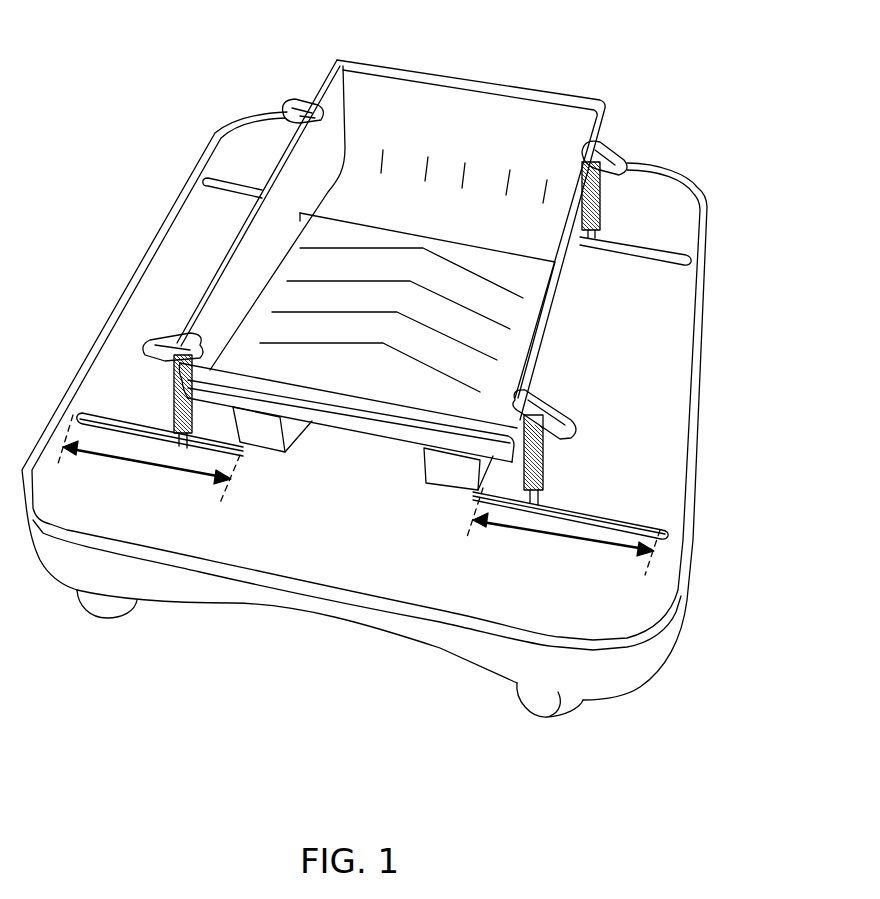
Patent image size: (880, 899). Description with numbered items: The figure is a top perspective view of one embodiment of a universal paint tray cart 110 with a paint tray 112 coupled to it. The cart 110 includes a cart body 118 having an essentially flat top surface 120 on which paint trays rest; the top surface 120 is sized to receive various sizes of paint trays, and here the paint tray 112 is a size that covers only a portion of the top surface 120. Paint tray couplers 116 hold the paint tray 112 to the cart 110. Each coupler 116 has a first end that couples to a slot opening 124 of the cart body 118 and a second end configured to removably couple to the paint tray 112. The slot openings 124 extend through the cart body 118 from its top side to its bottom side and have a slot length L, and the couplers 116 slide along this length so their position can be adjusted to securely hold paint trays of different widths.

The universal paint tray cart 110 is at (699, 161).
The paint tray 112 is at (446, 95).
The paint tray coupler 116 is at (294, 104).
The cart body 118 is at (684, 340).
The top surface 120 is at (338, 532).
The slot opening 124 is at (230, 183).